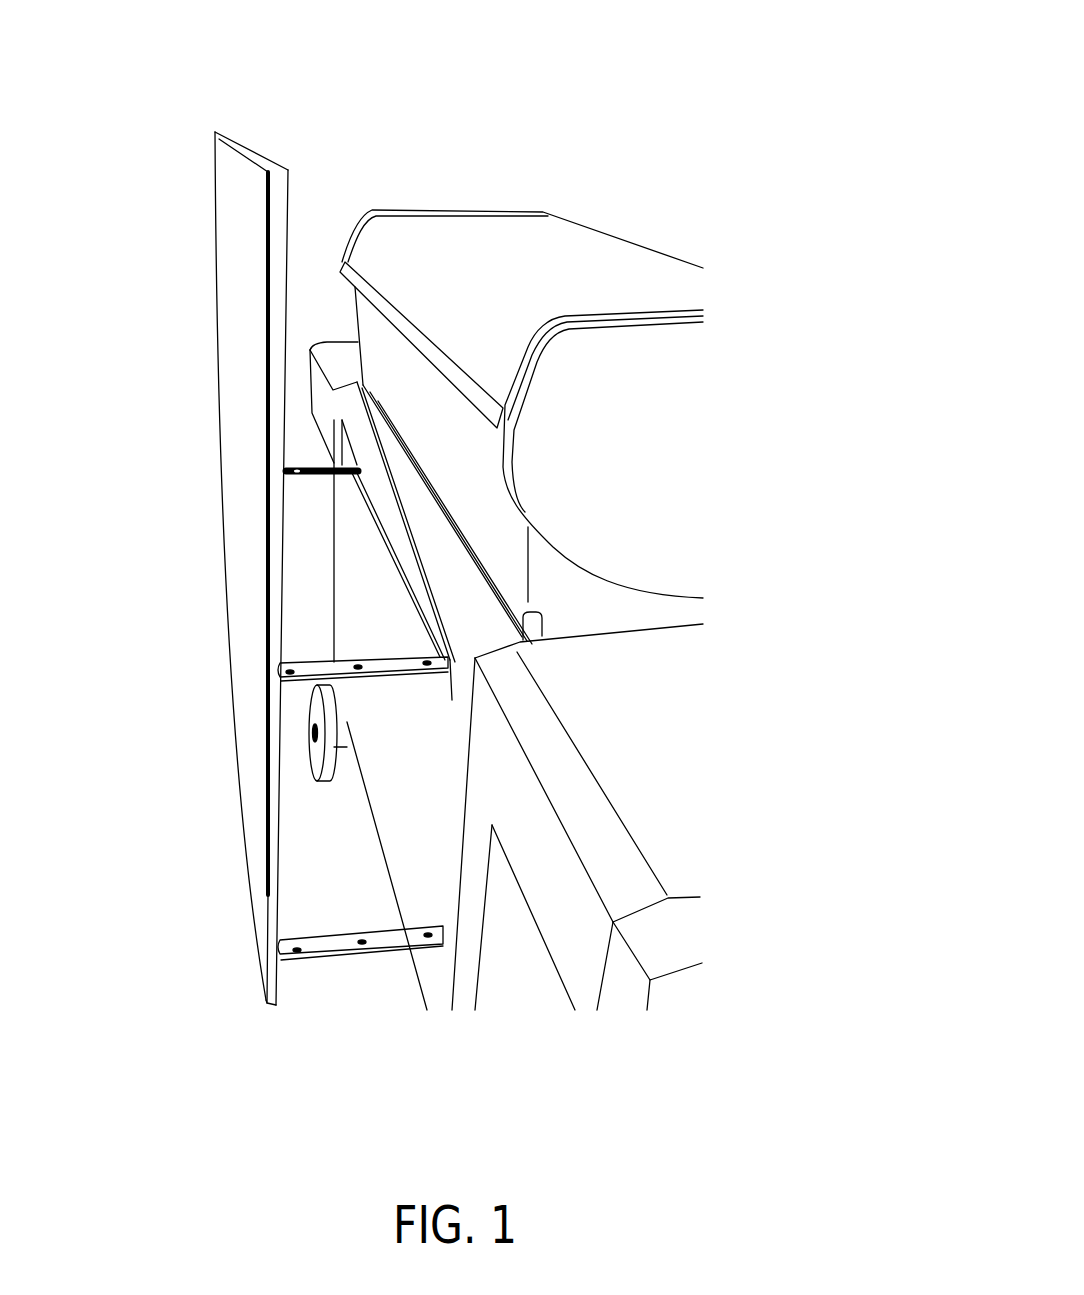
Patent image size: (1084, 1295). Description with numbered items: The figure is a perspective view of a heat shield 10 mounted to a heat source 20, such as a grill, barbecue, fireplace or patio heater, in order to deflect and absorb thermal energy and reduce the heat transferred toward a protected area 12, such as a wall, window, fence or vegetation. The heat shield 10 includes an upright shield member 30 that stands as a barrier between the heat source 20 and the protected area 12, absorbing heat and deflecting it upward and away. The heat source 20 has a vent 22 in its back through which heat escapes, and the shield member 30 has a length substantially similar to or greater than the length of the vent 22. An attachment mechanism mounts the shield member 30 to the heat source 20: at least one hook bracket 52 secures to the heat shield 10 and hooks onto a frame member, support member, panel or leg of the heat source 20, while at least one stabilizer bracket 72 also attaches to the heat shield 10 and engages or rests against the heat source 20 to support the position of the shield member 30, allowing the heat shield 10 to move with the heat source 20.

The heat shield 10 is at (313, 158).
The protected area 12 is at (60, 470).
The heat source 20 is at (485, 308).
The vent 22 is at (435, 368).
The shield member 30 is at (239, 182).
The hook bracket 52 is at (308, 466).
The stabilizer bracket 72 is at (410, 937).